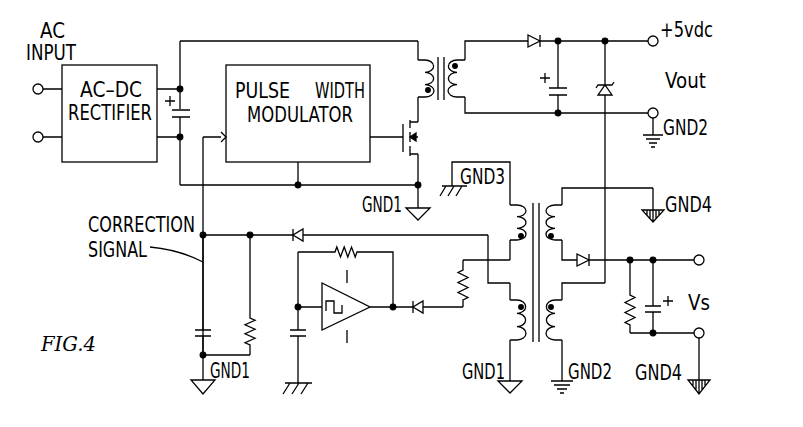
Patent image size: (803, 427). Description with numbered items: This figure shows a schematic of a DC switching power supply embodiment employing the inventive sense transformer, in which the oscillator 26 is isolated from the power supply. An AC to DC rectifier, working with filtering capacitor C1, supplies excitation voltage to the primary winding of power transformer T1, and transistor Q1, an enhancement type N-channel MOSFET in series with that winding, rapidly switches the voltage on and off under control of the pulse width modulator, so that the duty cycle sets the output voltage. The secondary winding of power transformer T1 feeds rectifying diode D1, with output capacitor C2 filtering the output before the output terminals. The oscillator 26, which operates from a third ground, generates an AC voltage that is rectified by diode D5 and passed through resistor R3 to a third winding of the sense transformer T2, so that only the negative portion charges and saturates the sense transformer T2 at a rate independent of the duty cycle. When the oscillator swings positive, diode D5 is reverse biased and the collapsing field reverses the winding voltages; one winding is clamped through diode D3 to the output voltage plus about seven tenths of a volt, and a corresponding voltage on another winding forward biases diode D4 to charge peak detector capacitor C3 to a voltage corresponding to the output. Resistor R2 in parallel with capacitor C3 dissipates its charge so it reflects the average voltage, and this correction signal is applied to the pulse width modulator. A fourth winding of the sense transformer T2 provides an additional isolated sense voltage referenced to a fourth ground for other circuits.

The oscillator 26 is at (372, 312).
The filtering capacitor C1 is at (185, 113).
The output filter capacitor C2 is at (564, 77).
The peak detector capacitor C3 is at (212, 295).
The rectifying diode D1 is at (546, 31).
The diode D3 is at (614, 77).
The diode D4 is at (311, 226).
The diode D5 is at (431, 297).
The transistor Q1 is at (426, 141).
The resistor R2 is at (260, 295).
The resistor R3 is at (450, 281).
The power transformer T1 is at (444, 67).
The sense transformer T2 is at (534, 263).